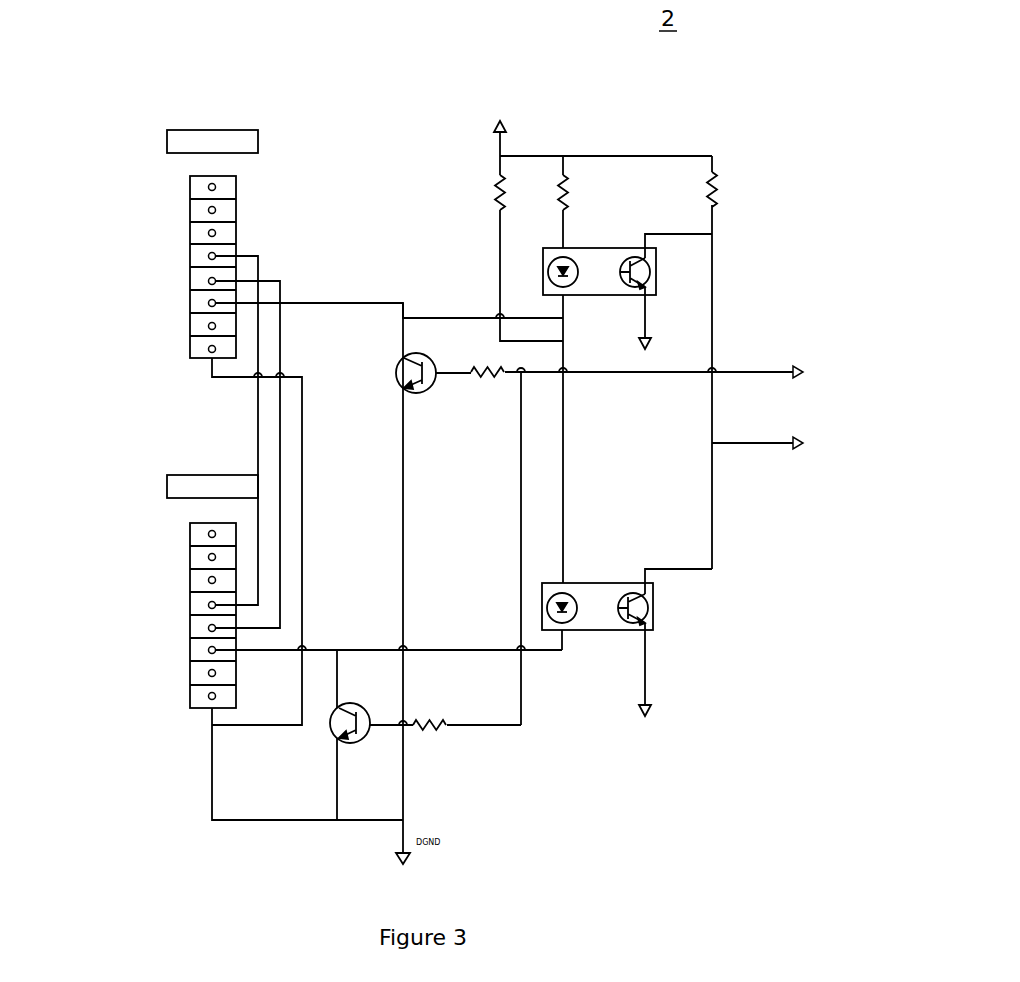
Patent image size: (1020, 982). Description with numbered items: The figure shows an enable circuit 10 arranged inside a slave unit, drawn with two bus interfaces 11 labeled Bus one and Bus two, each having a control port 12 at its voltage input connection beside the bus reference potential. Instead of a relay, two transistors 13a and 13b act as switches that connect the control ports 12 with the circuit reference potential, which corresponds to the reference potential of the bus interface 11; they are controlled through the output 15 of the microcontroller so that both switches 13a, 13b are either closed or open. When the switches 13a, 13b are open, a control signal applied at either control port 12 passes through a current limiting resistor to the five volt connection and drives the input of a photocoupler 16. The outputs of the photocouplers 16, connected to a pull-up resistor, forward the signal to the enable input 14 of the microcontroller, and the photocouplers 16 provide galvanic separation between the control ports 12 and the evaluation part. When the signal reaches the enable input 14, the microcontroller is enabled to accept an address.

The enable circuit 10 is at (758, 235).
The bus interface 11 is at (162, 232).
The control port 12 is at (113, 303).
The transistor 13a is at (383, 402).
The transistor 13b is at (317, 746).
The enable input 14 is at (757, 427).
The output of the microcontroller 15 is at (683, 354).
The photocoupler 16 is at (602, 309).